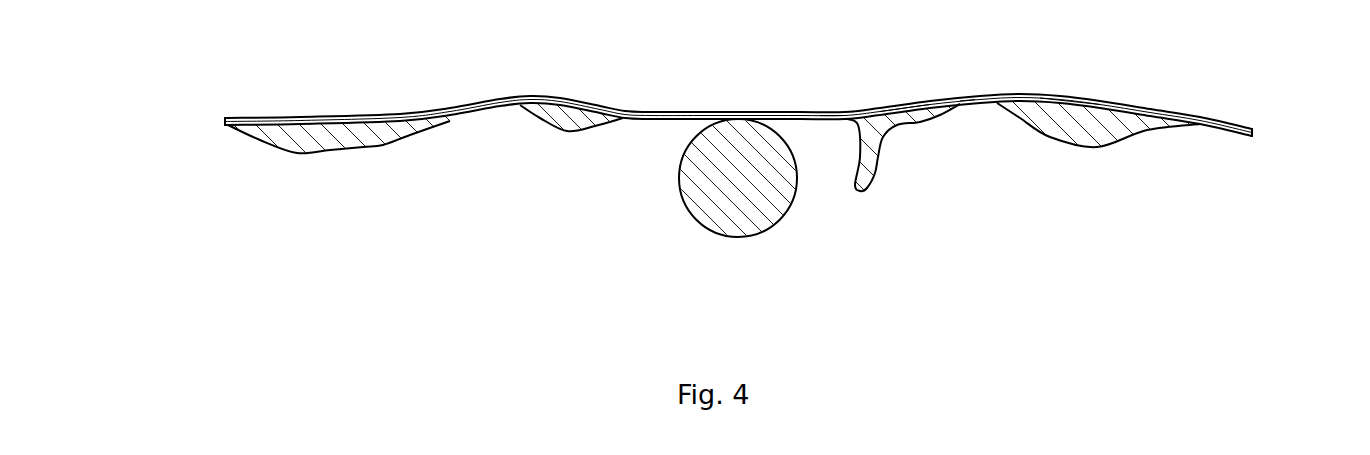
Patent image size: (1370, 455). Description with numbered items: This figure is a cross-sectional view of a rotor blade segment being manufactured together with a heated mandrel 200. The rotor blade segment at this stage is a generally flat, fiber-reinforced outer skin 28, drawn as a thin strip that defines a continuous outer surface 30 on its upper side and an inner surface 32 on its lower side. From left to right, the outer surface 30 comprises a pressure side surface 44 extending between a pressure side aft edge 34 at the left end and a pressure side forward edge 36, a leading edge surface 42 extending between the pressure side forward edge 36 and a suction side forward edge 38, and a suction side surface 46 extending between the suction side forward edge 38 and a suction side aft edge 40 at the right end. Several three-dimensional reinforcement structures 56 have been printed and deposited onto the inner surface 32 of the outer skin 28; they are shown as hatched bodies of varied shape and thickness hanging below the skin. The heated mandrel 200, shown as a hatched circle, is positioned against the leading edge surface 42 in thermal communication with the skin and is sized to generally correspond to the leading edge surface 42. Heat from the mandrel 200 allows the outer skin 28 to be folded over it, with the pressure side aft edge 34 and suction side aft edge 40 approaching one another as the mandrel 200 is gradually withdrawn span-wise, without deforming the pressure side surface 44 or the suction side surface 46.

The outer skin 28 is at (488, 108).
The continuous outer surface 30 is at (900, 101).
The inner surface 32 is at (970, 103).
The pressure side aft edge 34 is at (225, 117).
The pressure side forward edge 36 is at (625, 110).
The suction side forward edge 38 is at (843, 111).
The suction side aft edge 40 is at (1253, 130).
The leading edge surface 42 is at (740, 111).
The pressure side surface 44 is at (352, 119).
The suction side surface 46 is at (1070, 95).
The three-dimensional reinforcement structure 56 is at (880, 133).
The heated mandrel 200 is at (737, 228).